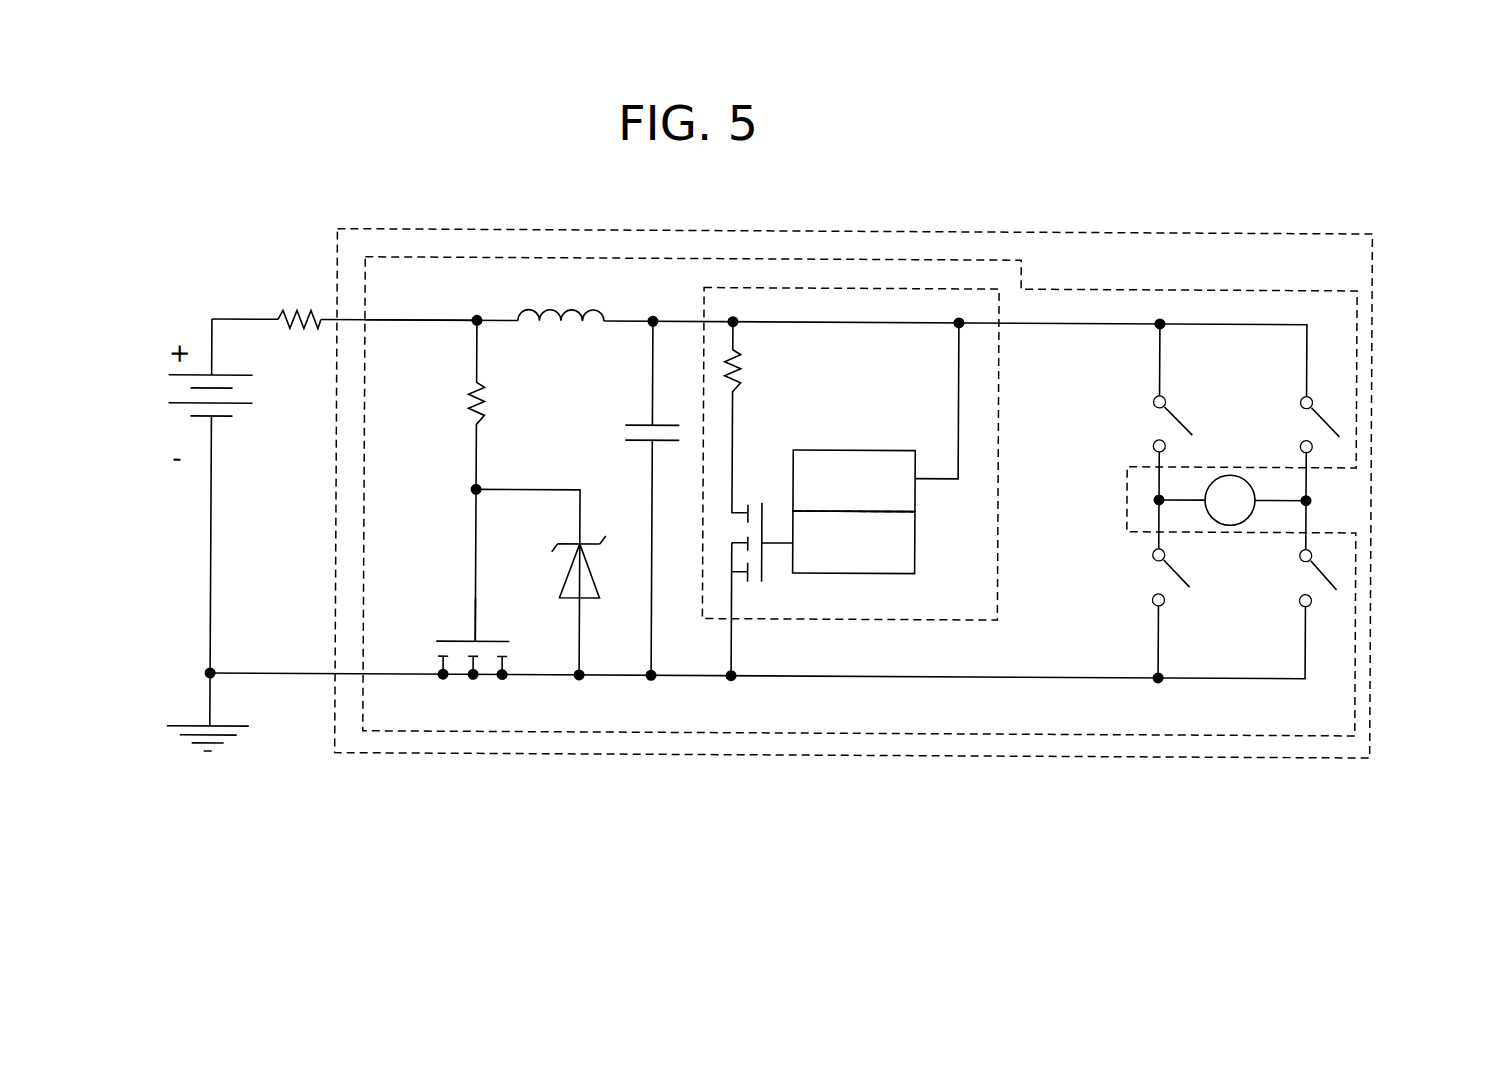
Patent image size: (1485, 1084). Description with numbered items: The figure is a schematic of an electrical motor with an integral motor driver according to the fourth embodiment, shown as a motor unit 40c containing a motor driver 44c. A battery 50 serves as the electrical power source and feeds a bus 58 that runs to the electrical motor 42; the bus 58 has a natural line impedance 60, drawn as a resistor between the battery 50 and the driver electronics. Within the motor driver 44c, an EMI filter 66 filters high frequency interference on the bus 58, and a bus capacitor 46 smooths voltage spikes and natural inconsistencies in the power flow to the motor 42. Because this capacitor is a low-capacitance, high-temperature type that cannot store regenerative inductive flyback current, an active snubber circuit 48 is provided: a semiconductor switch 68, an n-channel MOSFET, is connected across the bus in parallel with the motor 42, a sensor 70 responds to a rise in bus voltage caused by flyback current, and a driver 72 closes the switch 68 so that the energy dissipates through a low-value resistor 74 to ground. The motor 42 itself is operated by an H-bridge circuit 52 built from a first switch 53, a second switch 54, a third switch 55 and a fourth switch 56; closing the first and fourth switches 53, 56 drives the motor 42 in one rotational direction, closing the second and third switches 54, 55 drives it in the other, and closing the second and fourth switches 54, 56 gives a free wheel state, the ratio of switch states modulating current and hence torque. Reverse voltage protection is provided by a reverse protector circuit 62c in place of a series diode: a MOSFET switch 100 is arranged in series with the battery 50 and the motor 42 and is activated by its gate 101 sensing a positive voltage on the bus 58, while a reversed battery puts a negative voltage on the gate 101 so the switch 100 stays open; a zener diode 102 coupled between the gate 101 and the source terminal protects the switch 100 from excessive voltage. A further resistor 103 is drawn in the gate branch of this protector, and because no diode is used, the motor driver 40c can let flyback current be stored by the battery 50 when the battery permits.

The motor driver 40c is at (1143, 233).
The motor driver 44c is at (493, 257).
The active snubber circuit 48 is at (922, 289).
The battery 50 is at (252, 394).
The line impedance 60 is at (297, 314).
The bus 58 is at (388, 325).
The EMI filter 66 is at (548, 311).
The resistor 103 is at (483, 395).
The bus capacitor 46 is at (628, 434).
The reverse protector circuit 62c is at (418, 603).
The switch 100 is at (472, 638).
The gate 101 is at (507, 590).
The zener diode 102 is at (592, 573).
The resistor 74 is at (748, 369).
The semiconductor switch 68 is at (778, 530).
The sensor 70 is at (863, 460).
The driver 72 is at (904, 550).
The H-bridge circuit 52 is at (1328, 393).
The first switch 53 is at (1188, 423).
The third switch 55 is at (1328, 424).
The electrical motor 42 is at (1252, 483).
The second switch 54 is at (1182, 575).
The fourth switch 56 is at (1327, 575).